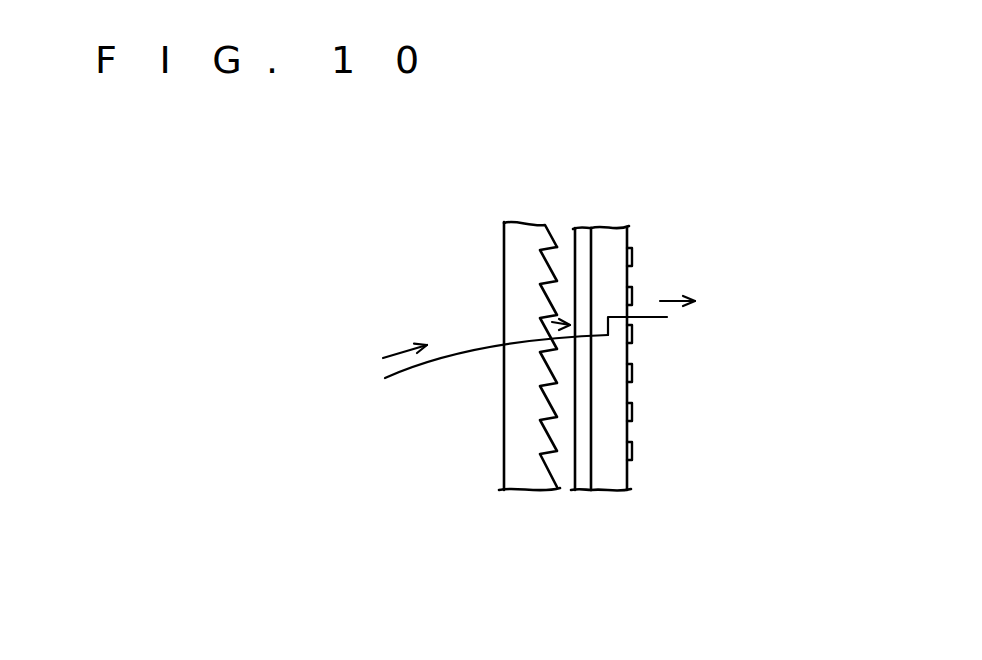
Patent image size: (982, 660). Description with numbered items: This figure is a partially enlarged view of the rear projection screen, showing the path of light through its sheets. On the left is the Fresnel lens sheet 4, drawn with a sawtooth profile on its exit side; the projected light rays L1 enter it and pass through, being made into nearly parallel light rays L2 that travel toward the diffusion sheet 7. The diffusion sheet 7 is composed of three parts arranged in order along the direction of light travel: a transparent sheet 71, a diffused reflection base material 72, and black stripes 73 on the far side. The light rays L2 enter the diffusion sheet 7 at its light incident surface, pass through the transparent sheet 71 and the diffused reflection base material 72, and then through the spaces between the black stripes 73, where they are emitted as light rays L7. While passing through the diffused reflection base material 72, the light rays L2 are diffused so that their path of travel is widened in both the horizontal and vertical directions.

The Fresnel lens sheet 4 is at (500, 252).
The diffusion sheet 7 is at (640, 377).
The transparent sheet 71 is at (585, 480).
The diffused reflection base material 72 is at (610, 477).
The black stripes 73 is at (632, 448).
The projected light rays L1 is at (393, 352).
The nearly parallel light rays L2 is at (553, 318).
The emitted light rays L7 is at (668, 300).